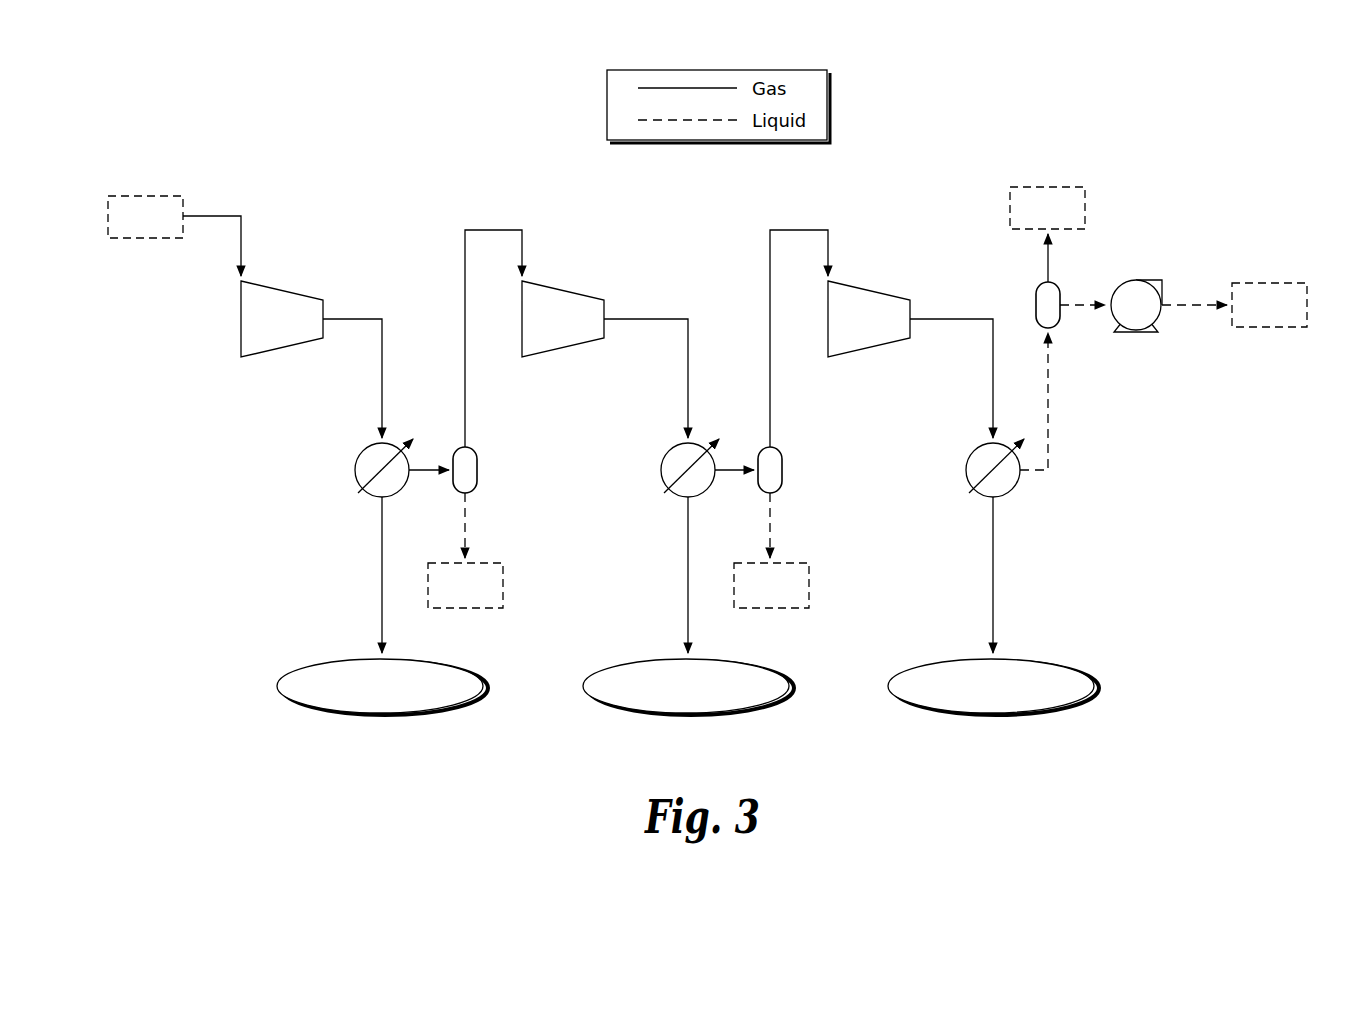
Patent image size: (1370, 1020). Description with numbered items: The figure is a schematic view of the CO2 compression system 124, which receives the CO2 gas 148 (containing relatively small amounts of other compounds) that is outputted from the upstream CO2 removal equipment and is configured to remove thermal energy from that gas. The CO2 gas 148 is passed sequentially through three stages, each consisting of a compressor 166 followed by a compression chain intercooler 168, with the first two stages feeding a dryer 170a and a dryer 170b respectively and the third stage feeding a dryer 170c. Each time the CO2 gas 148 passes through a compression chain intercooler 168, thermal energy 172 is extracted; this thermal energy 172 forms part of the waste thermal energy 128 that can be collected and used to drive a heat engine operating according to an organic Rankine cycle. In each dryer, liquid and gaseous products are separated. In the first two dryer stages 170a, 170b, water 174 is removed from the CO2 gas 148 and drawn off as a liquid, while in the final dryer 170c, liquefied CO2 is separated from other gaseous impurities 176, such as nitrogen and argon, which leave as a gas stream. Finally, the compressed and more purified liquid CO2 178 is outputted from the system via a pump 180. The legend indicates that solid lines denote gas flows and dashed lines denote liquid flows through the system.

The CO2 compression system 124 is at (132, 148).
The CO2 gas 148 is at (183, 196).
The compressor 166 is at (279, 291).
The compression chain intercooler 168 is at (362, 453).
The dryer 170a is at (477, 460).
The dryer 170b is at (783, 460).
The dryer 170c is at (1060, 296).
The water 174 is at (503, 564).
The gaseous impurities 176 is at (1085, 188).
The liquid CO2 178 is at (1307, 283).
The pump 180 is at (1166, 285).
The waste thermal energy 128 is at (659, 705).
The thermal energy 172 is at (332, 712).